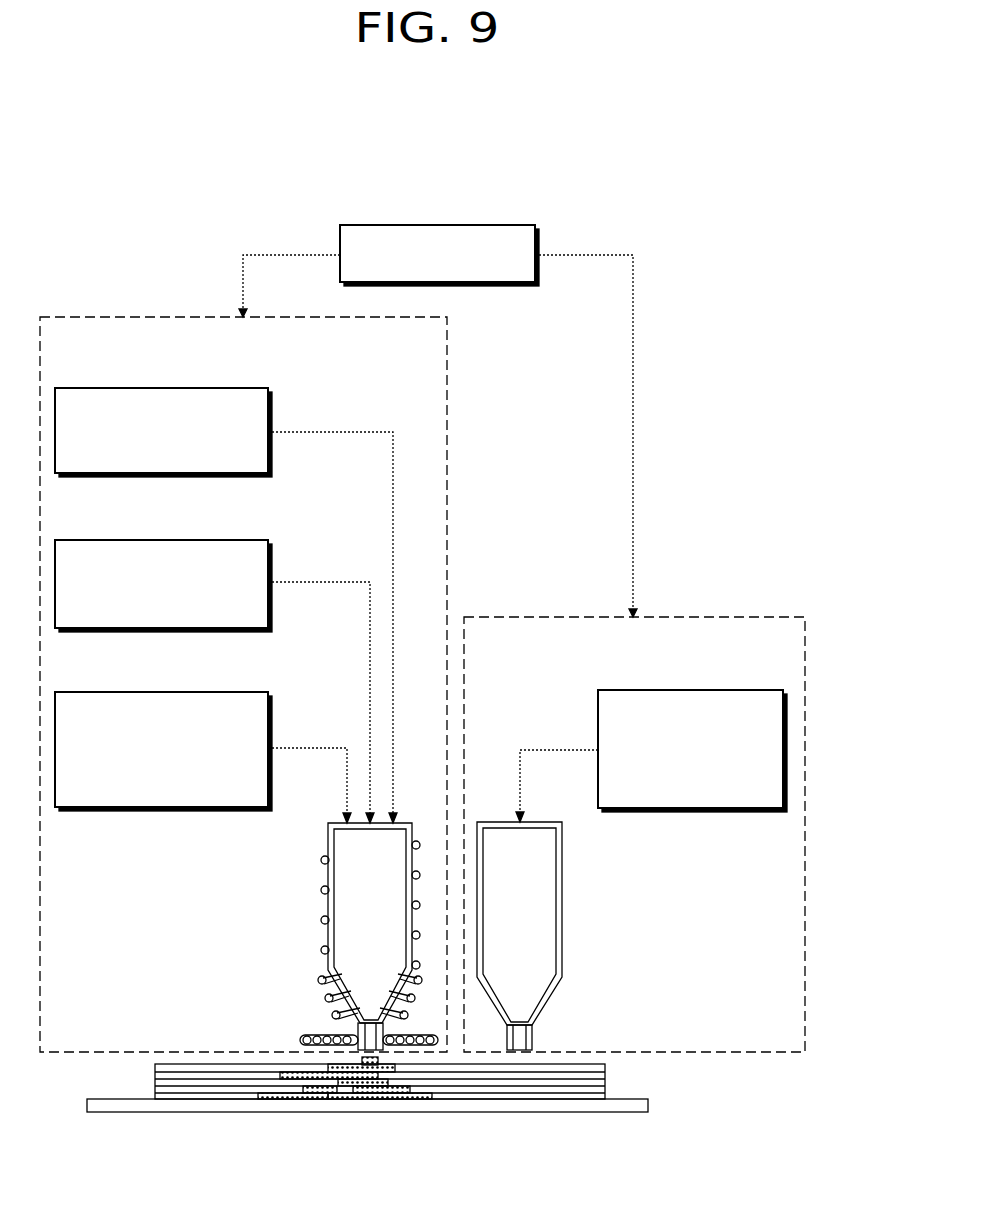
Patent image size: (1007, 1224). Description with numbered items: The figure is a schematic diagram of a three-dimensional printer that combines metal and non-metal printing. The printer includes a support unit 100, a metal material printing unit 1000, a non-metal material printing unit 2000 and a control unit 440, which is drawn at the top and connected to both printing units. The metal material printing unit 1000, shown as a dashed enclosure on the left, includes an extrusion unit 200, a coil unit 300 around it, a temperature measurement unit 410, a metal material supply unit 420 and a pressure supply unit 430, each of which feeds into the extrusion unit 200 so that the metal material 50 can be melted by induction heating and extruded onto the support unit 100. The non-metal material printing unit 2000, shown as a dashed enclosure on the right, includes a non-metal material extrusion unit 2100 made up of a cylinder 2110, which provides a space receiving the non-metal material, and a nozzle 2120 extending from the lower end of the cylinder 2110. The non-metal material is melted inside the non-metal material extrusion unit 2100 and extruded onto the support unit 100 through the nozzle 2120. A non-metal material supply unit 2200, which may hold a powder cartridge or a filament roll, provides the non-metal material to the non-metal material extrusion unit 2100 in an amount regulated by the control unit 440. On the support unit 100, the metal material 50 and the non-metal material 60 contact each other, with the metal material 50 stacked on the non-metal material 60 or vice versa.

The metal material printing unit 1000 is at (105, 317).
The non-metal material printing unit 2000 is at (717, 617).
The control unit 440 is at (490, 225).
The pressure supply unit 430 is at (225, 388).
The metal material supply unit 420 is at (222, 540).
The temperature measurement unit 410 is at (222, 692).
The non-metal material supply unit 2200 is at (738, 690).
The coil unit 300 is at (326, 827).
The extrusion unit 200 is at (326, 875).
The non-metal material extrusion unit 2100 is at (602, 936).
The cylinder 2110 is at (562, 915).
The nozzle 2120 is at (581, 1037).
The non-metal material 60 is at (485, 1100).
The metal material 50 is at (368, 1100).
The support unit 100 is at (650, 1102).